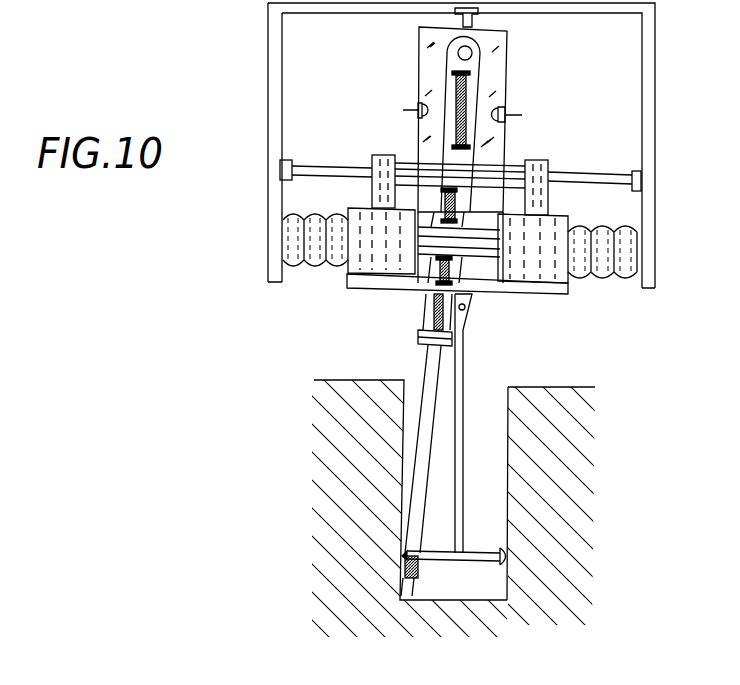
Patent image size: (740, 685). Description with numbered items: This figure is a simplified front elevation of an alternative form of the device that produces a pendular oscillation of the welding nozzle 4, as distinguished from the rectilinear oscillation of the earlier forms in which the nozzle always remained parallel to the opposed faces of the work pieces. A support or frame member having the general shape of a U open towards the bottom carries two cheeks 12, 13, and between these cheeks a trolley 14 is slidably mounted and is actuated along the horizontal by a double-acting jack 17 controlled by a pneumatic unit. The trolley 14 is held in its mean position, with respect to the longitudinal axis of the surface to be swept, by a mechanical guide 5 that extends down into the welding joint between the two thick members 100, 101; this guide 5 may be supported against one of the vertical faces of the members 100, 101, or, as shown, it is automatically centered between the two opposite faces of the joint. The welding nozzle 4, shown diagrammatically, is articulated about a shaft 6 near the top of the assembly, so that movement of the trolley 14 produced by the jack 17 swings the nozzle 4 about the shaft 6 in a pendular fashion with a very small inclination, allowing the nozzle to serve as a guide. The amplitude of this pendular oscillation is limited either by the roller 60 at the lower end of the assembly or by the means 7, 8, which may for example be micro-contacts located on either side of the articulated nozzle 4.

The welding nozzle 4 is at (423, 462).
The mechanical guide 5 is at (463, 392).
The shaft 6 is at (473, 52).
The means 7 is at (405, 107).
The means 8 is at (518, 111).
The cheek 12 is at (657, 84).
The cheek 13 is at (267, 72).
The trolley 14 is at (360, 292).
The double-acting jack 17 is at (517, 159).
The roller 60 is at (423, 574).
The member 100 is at (365, 380).
The member 101 is at (556, 387).